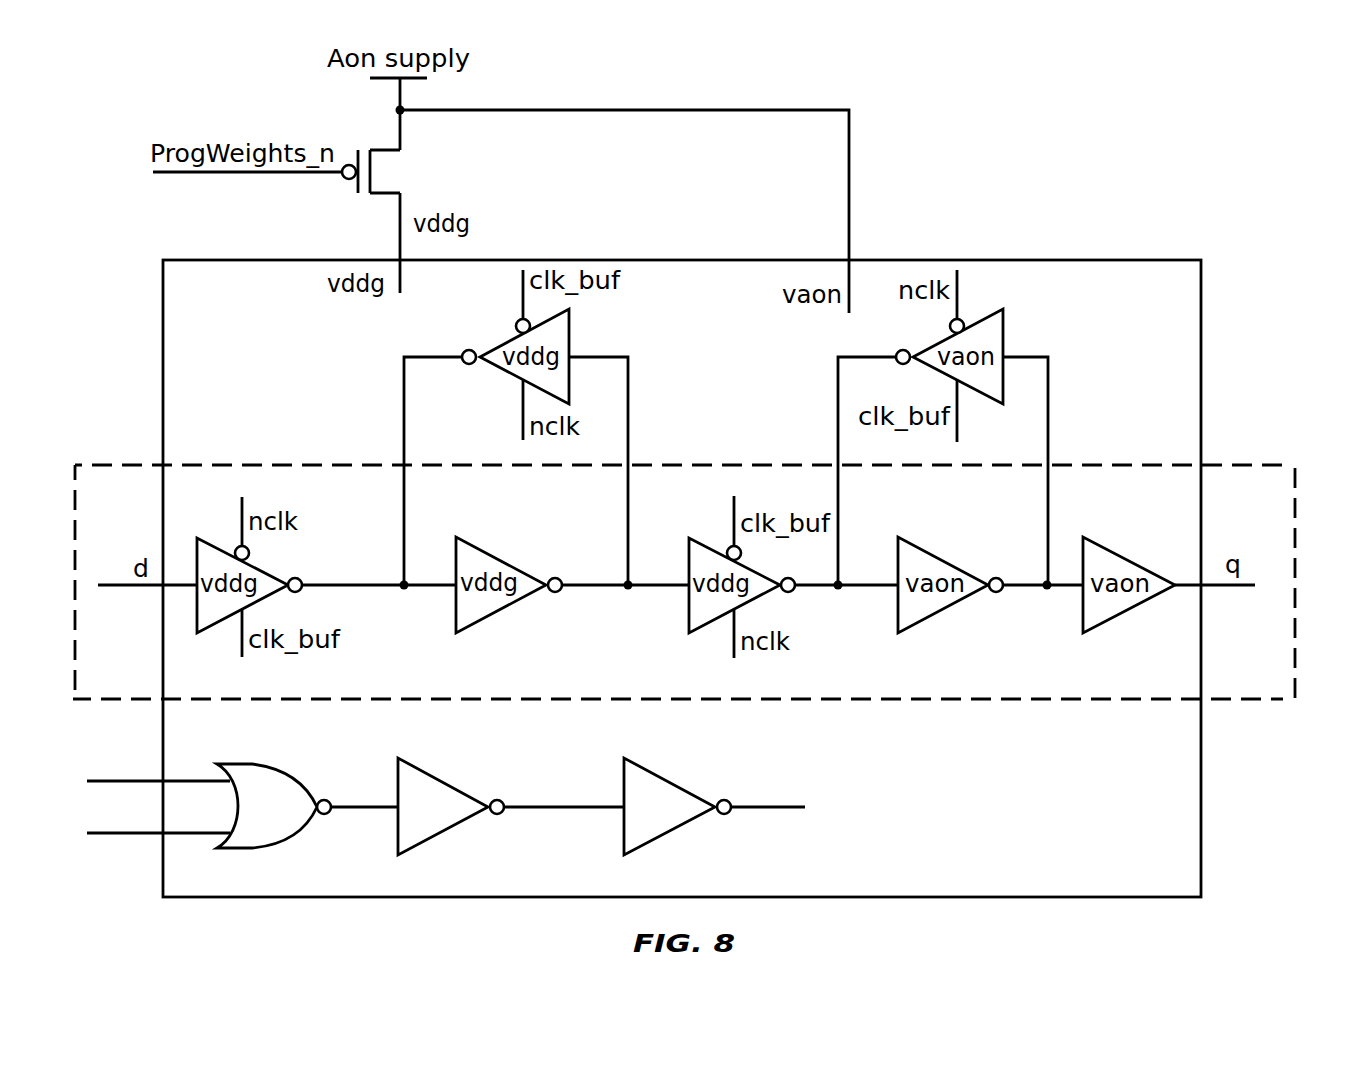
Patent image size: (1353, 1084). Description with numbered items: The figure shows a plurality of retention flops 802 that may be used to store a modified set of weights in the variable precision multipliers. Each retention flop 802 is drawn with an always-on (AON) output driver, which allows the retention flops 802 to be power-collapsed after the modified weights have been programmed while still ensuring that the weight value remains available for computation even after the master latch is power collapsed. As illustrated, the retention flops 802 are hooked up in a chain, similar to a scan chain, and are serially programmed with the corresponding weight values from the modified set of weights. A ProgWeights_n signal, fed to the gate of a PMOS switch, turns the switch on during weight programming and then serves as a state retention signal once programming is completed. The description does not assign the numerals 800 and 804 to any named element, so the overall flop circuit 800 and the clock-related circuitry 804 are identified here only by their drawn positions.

The retention flip-flop 800 is at (1201, 262).
The retention flops 802 is at (1262, 465).
The clock generation circuit 804 is at (560, 857).